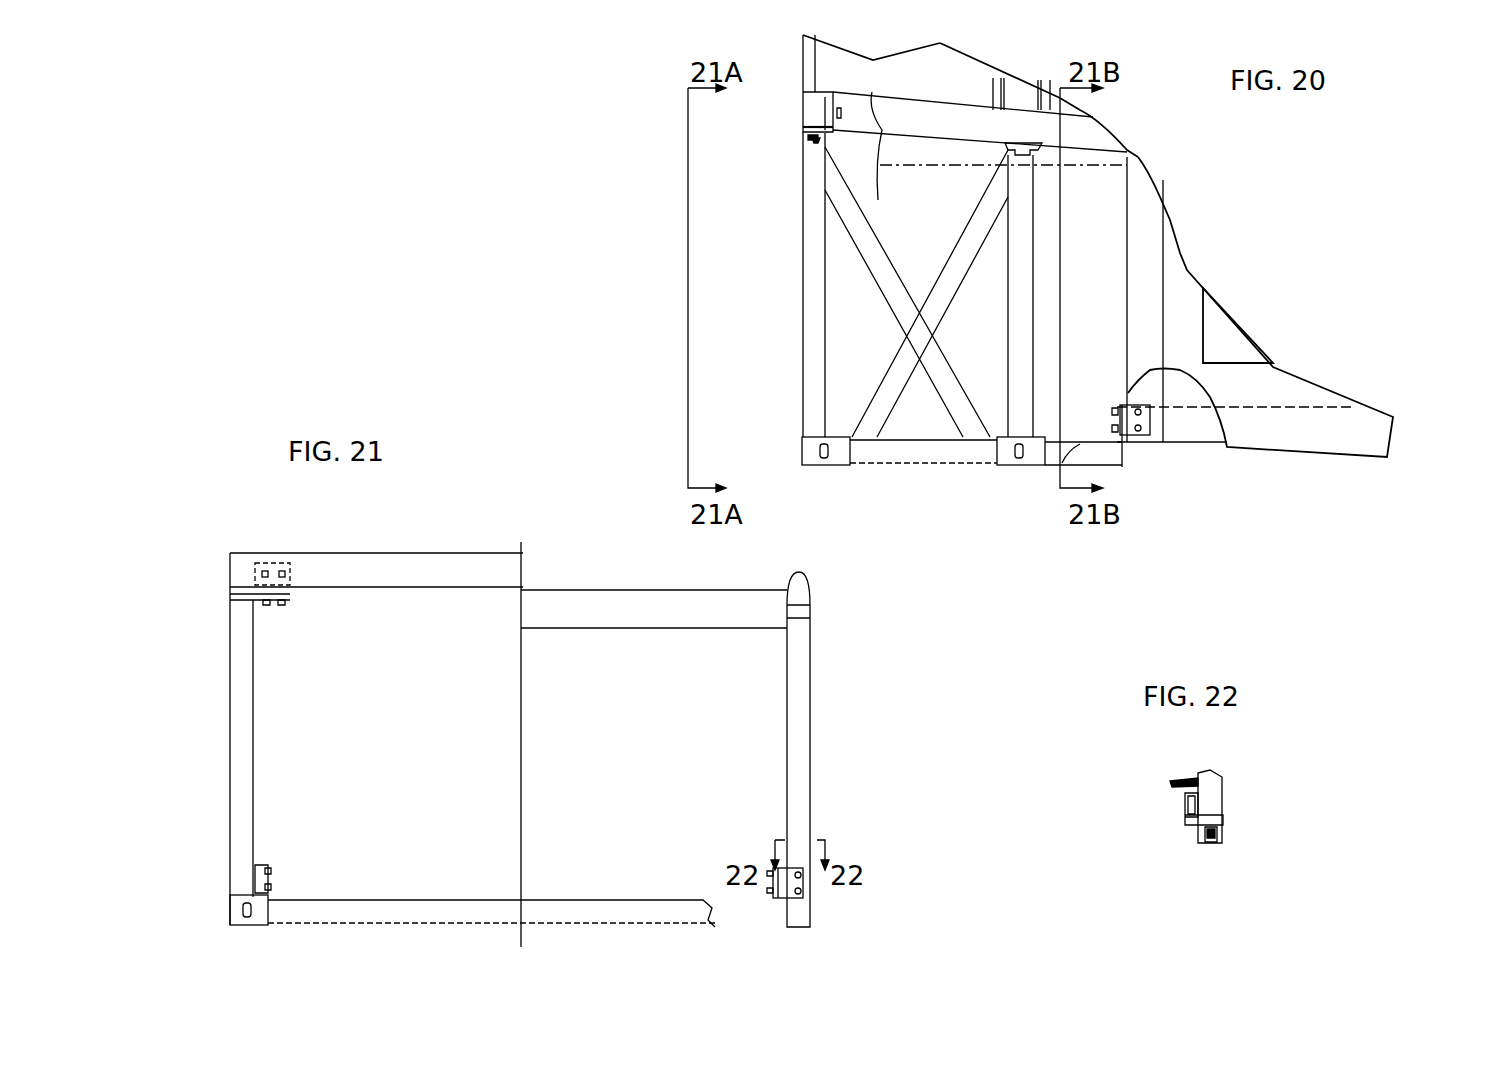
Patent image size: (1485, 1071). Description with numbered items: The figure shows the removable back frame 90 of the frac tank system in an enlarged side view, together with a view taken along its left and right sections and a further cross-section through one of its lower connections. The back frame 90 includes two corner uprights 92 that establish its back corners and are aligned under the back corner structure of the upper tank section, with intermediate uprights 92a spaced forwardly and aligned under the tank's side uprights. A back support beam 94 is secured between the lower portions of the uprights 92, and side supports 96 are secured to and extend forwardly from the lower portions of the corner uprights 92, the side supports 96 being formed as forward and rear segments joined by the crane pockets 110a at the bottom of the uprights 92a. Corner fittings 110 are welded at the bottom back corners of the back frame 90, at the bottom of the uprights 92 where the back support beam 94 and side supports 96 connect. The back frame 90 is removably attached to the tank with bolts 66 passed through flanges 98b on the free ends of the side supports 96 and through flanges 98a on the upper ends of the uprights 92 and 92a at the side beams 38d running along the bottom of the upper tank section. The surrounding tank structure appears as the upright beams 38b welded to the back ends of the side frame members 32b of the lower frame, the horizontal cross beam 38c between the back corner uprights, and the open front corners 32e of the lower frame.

In FIG. 20, the back frame 90 is at (971, 315).
In FIG. 21, the back frame 90 is at (540, 699).
In FIG. 20, the uprights 92 is at (803, 268).
In FIG. 21, the uprights 92 is at (255, 717).
In FIG. 20, the uprights 92a is at (1020, 345).
In FIG. 21, the back support beam 94 is at (418, 900).
In FIG. 20, the side supports 96 is at (930, 467).
In FIG. 21, the side supports 96 is at (272, 898).
In FIG. 22, the side supports 96 is at (1223, 838).
In FIG. 20, the flanges 98a is at (833, 97).
In FIG. 21, the flanges 98a is at (282, 563).
In FIG. 20, the flanges 98b is at (1120, 435).
In FIG. 21, the flanges 98b is at (248, 866).
In FIG. 22, the flanges 98b is at (1185, 825).
In FIG. 20, the corner fittings 110 is at (823, 467).
In FIG. 21, the corner fittings 110 is at (230, 918).
In FIG. 20, the crane pockets 110a is at (1015, 467).
In FIG. 20, the bolts 66 is at (840, 112).
In FIG. 21, the bolts 66 is at (283, 605).
In FIG. 22, the bolts 66 is at (1185, 805).
In FIG. 20, the upright beams 38b is at (1155, 208).
In FIG. 20, the horizontal cross beam 38c is at (803, 112).
In FIG. 21, the horizontal cross beam 38c is at (518, 573).
In FIG. 20, the side beams 38d is at (992, 105).
In FIG. 20, the front corners 32e is at (1007, 82).
In FIG. 22, the side frame members 32b is at (1222, 783).